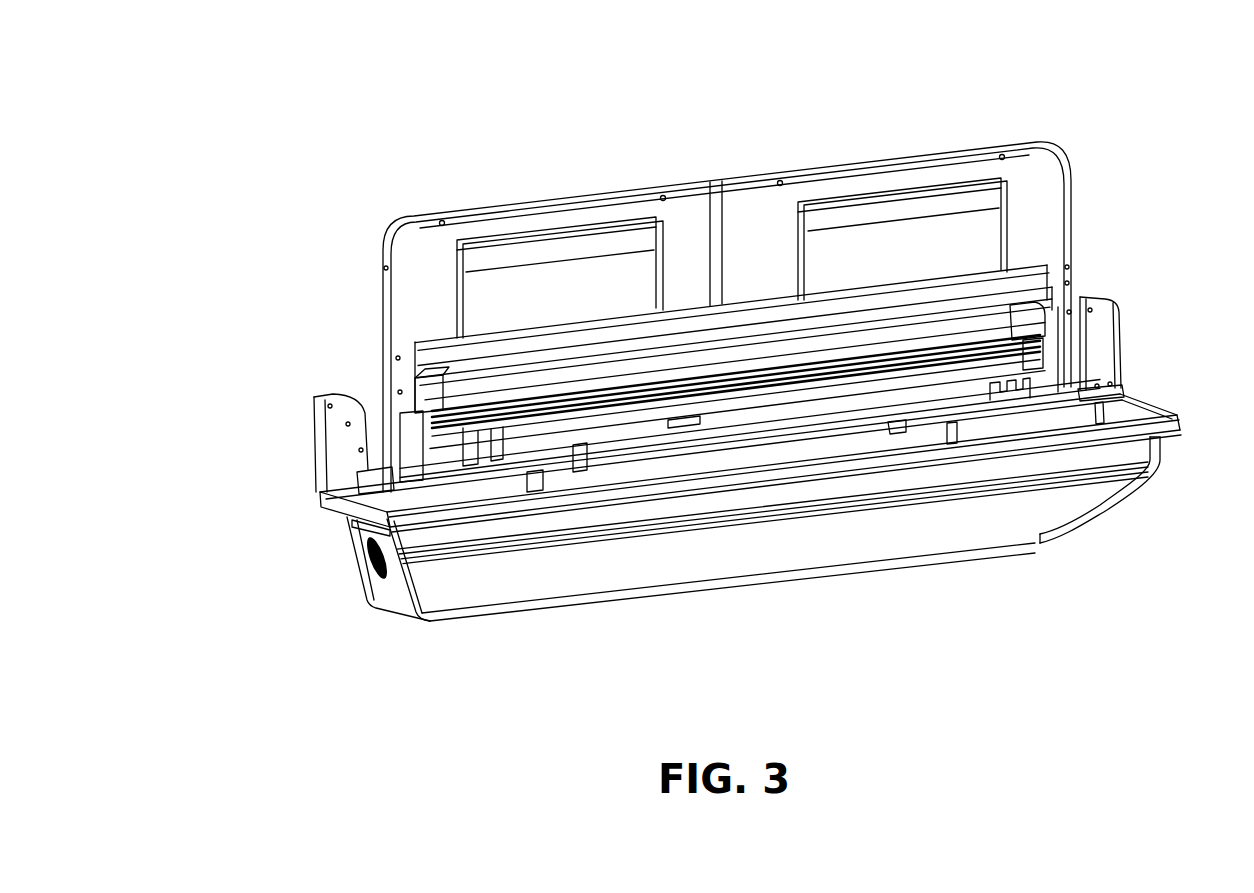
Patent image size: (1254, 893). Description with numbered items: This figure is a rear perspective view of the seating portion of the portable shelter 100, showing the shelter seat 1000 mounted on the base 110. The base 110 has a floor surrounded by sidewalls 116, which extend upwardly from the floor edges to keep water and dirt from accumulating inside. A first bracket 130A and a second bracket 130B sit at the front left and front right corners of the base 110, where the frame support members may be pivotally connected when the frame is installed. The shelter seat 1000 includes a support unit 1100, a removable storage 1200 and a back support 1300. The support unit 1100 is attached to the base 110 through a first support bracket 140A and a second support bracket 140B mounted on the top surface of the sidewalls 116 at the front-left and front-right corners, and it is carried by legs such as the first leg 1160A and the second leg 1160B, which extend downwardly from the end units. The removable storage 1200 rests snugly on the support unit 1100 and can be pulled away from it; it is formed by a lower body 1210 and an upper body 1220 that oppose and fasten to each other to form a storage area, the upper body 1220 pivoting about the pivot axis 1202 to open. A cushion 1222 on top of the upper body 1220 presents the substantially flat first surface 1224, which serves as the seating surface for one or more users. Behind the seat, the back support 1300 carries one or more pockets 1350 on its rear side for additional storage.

The portable shelter 100 is at (258, 39).
The shelter seat 1000 is at (392, 226).
The back support 1300 is at (1037, 142).
The pockets 1350 is at (958, 231).
The removable storage 1200 is at (730, 345).
The first (top) surface 1224 is at (977, 303).
The cushion 1222 is at (1008, 322).
The upper body 1220 is at (423, 390).
The lower body 1210 is at (778, 545).
The pivot axis 1202 is at (683, 413).
The first bracket 130A is at (337, 444).
The second bracket 130B is at (1100, 373).
The first support bracket 140A is at (330, 489).
The second support bracket 140B is at (1096, 385).
The support unit 1100 is at (373, 465).
The first leg 1160A is at (357, 523).
The second leg 1160B is at (967, 437).
The sidewalls 116 is at (893, 532).
The base 110 is at (367, 600).